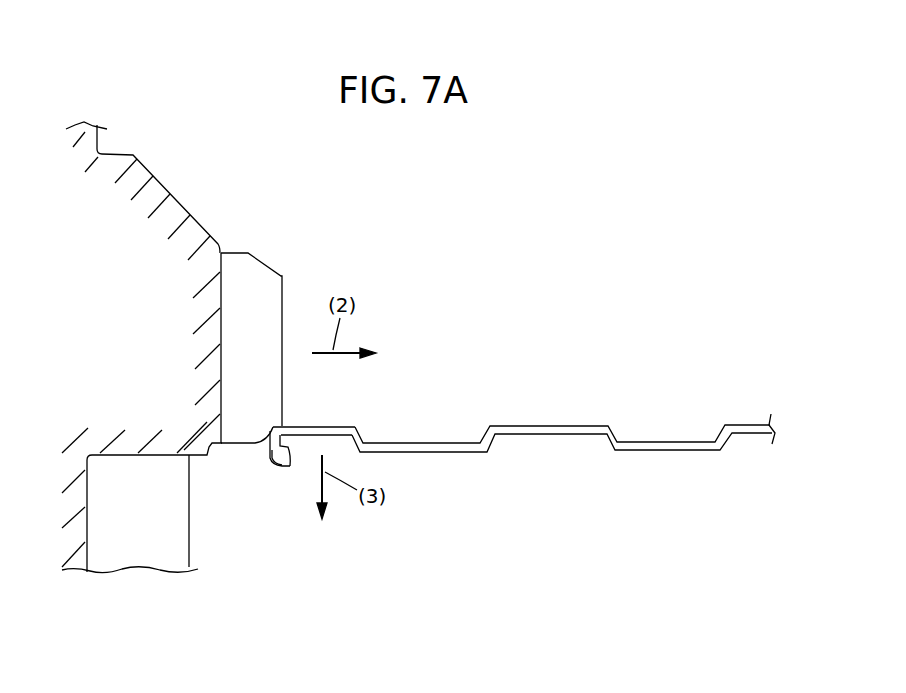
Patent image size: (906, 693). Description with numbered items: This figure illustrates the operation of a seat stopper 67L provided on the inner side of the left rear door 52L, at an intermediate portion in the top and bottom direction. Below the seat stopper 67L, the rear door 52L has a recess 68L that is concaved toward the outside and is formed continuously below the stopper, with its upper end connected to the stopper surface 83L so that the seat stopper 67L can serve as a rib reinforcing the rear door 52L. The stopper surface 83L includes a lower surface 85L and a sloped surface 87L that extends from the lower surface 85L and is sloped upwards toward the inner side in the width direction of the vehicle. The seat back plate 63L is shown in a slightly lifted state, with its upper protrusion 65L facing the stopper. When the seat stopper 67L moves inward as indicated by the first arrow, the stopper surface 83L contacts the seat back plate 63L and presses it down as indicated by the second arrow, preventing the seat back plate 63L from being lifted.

The left rear door 52L is at (164, 187).
The seat stopper 67L is at (287, 282).
The recess 68L is at (87, 525).
The lower surface 85L is at (237, 448).
The stopper surface 83L is at (262, 440).
The upper protrusion 65L is at (340, 423).
The sloped surface 87L is at (290, 466).
The seat back plate 63L is at (548, 423).